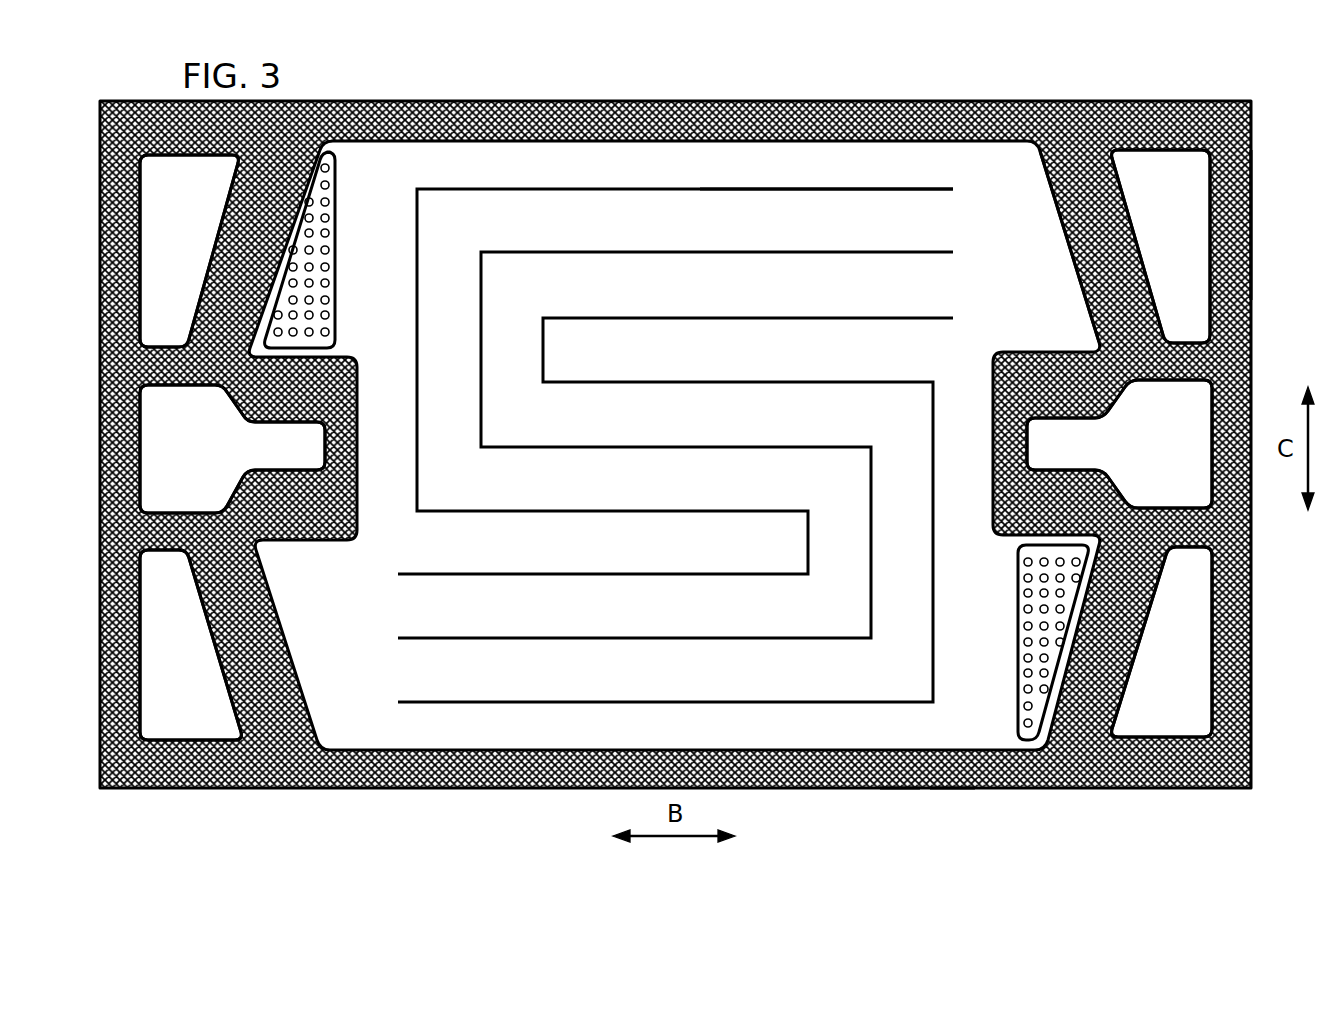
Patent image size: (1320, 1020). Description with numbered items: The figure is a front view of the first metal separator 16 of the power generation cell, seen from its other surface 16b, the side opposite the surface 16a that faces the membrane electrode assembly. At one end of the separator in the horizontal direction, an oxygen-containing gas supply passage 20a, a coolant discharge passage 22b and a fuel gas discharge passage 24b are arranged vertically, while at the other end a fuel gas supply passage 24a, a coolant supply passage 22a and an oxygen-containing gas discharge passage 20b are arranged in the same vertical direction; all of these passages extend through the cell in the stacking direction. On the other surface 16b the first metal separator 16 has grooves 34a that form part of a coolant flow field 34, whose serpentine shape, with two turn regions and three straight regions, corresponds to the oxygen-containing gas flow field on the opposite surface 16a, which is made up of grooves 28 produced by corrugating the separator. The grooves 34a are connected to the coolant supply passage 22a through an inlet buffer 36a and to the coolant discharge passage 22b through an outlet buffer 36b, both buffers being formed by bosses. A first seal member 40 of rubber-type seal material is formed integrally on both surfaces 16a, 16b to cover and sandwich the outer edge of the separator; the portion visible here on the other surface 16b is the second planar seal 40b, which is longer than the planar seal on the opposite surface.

The first metal separator 16 is at (990, 84).
The surface 16a is at (952, 788).
The other surface 16b is at (898, 788).
The oxygen-containing gas supply passage 20a is at (1161, 246).
The oxygen-containing gas discharge passage 20b is at (190, 645).
The coolant supply passage 22a is at (232, 449).
The coolant discharge passage 22b is at (1119, 444).
The fuel gas supply passage 24a is at (189, 251).
The fuel gas discharge passage 24b is at (1162, 642).
The grooves 28 is at (830, 215).
The coolant flow field 34 is at (591, 214).
The grooves 34a is at (747, 187).
The inlet buffer 36a is at (329, 282).
The outlet buffer 36b is at (1024, 641).
The first seal member 40 is at (1100, 148).
The second planar seal 40b is at (1243, 205).